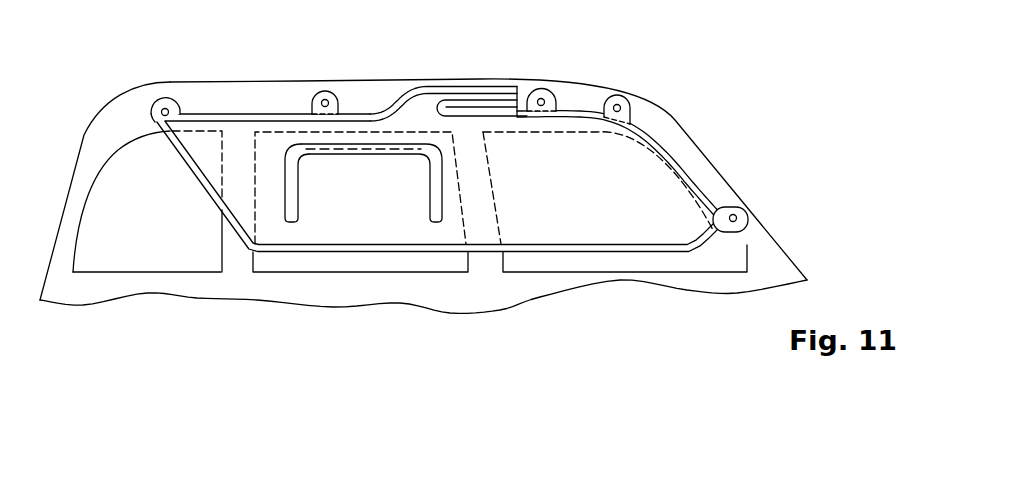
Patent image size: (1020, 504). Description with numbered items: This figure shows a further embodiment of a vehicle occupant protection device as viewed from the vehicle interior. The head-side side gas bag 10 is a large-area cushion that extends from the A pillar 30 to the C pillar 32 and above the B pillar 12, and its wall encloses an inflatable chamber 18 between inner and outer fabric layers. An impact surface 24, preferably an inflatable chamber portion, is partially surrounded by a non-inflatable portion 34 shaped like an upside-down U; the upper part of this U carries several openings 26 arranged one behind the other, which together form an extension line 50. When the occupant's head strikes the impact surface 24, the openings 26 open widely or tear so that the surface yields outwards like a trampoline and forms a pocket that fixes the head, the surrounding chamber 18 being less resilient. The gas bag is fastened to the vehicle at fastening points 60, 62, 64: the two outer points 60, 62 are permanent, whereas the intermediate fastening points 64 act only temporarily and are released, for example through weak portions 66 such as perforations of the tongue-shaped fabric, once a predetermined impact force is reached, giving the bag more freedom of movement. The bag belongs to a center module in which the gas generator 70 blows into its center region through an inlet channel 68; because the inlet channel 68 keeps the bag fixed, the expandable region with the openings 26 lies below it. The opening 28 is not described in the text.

The side gas bag 10 is at (640, 160).
The B pillar 12 is at (485, 258).
The inflatable chamber 18 is at (640, 160).
The impact surface 24 is at (375, 200).
The openings 26 is at (401, 147).
The opening 28 is at (318, 228).
The A pillar 30 is at (720, 193).
The C pillar 32 is at (238, 260).
The non-inflatable portion 34 is at (290, 153).
The extension line 50 is at (318, 143).
The fastening point 60 is at (745, 220).
The fastening point 62 is at (153, 110).
The fastening points 64 is at (327, 93).
The weak portions 66 is at (333, 95).
The inlet channel 68 is at (433, 103).
The gas generator 70 is at (493, 97).